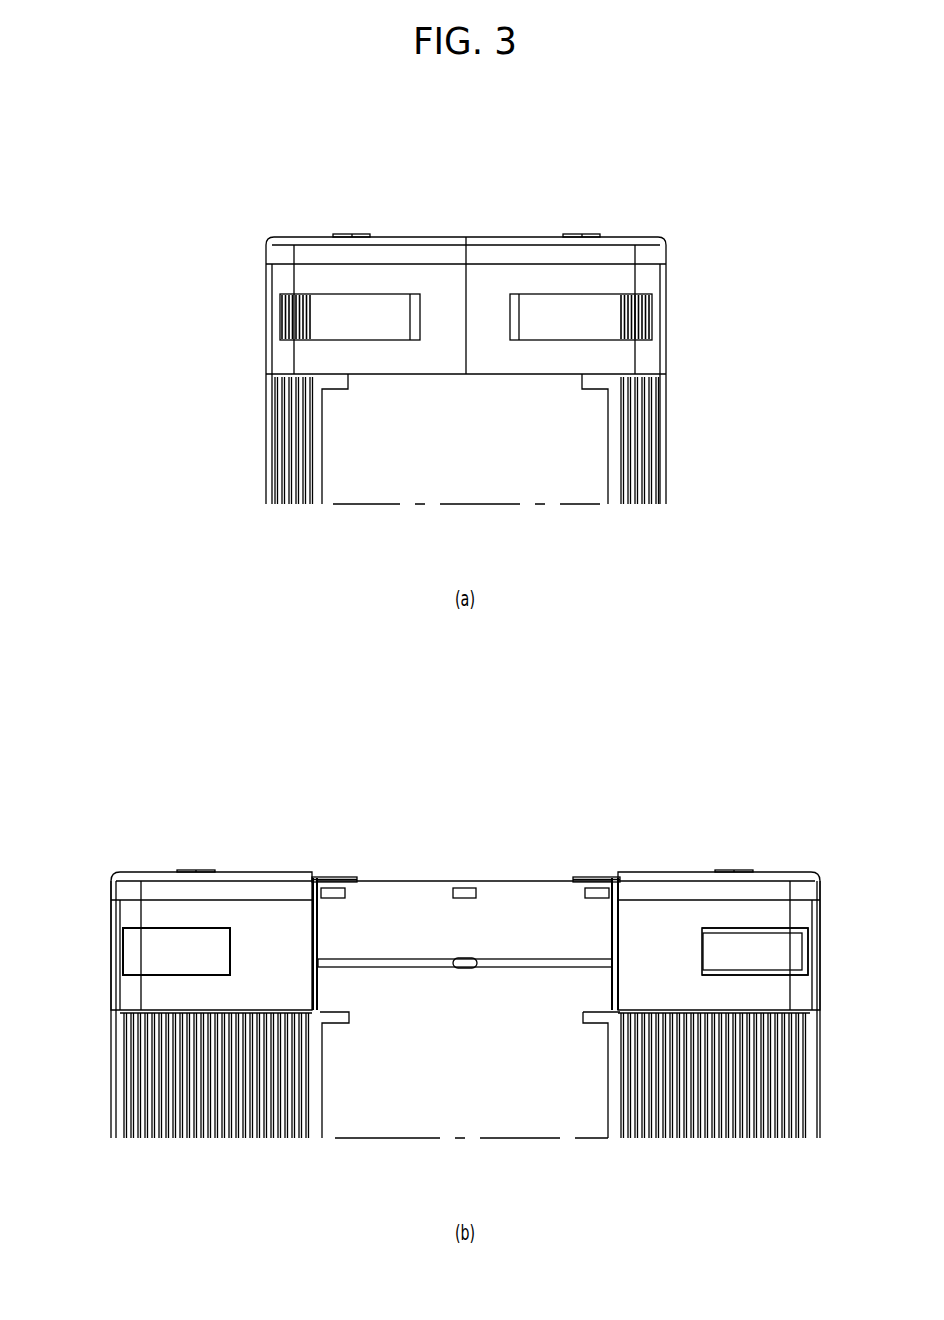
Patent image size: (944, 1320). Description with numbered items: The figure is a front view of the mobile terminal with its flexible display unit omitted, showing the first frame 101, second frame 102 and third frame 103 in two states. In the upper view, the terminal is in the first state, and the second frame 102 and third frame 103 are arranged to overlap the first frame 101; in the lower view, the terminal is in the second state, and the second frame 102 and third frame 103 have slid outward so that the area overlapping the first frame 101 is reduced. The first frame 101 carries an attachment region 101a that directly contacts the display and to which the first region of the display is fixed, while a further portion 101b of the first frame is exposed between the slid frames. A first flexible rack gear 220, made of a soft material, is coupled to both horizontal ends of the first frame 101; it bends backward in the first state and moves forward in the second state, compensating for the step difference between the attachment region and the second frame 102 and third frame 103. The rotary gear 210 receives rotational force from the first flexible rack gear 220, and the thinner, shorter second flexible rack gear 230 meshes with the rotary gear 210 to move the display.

The first frame 101 is at (575, 485).
The attachment region 101a is at (587, 1122).
The middle coupling plate 101b is at (497, 897).
The second frame 102 is at (533, 258).
The third frame 103 is at (396, 258).
The rotary gear 210 is at (640, 320).
The first flexible rack gear 220 is at (642, 450).
The second flexible rack gear 230 is at (137, 952).